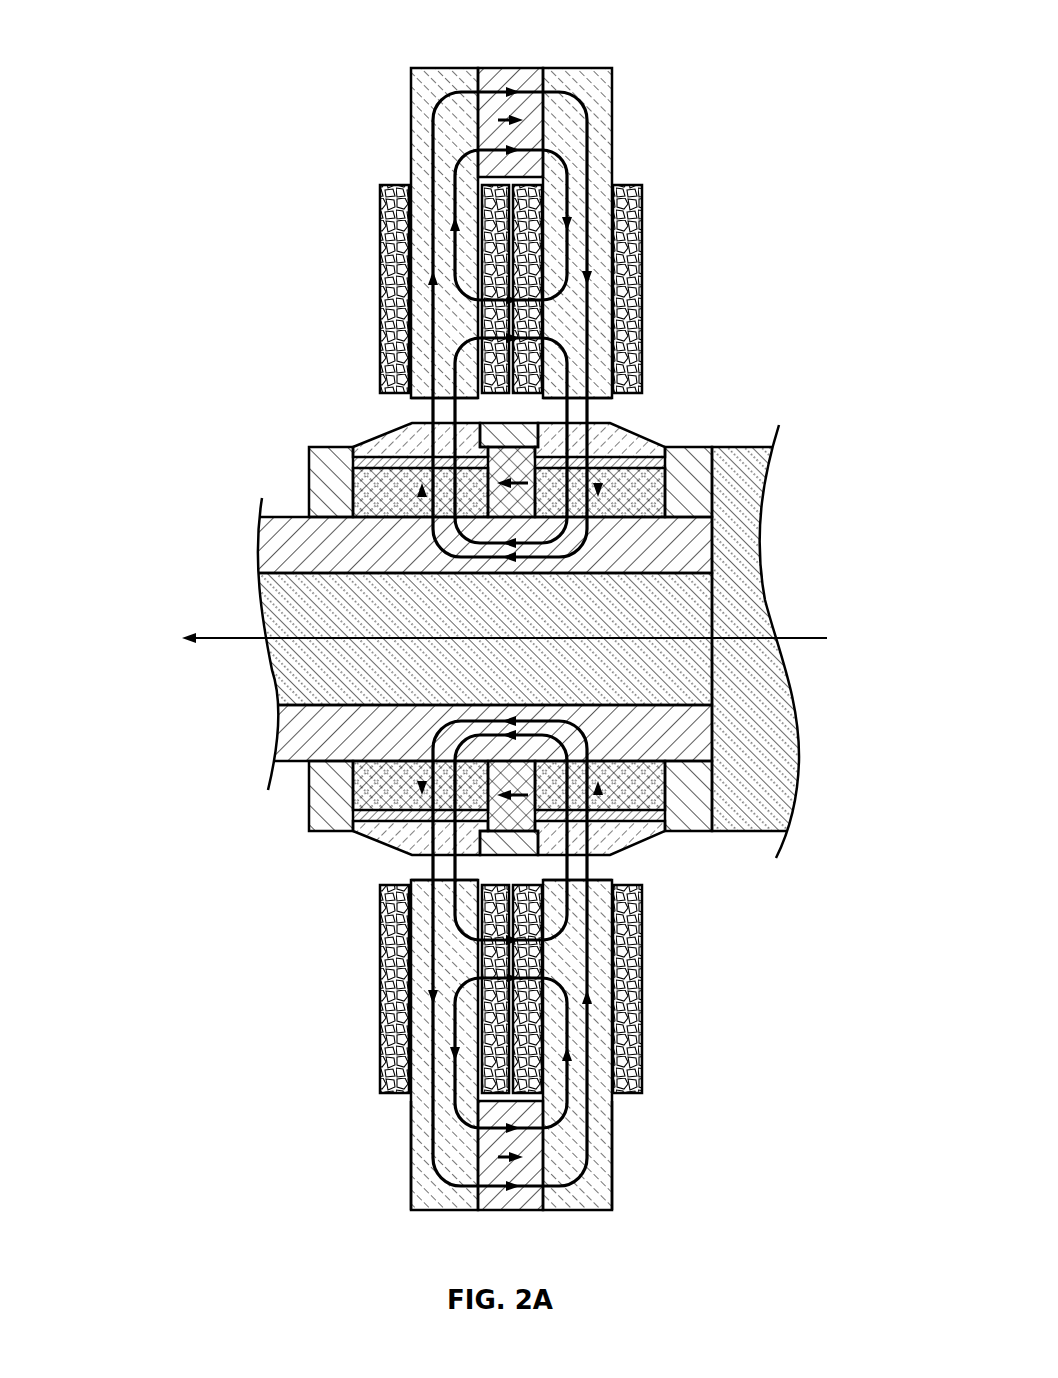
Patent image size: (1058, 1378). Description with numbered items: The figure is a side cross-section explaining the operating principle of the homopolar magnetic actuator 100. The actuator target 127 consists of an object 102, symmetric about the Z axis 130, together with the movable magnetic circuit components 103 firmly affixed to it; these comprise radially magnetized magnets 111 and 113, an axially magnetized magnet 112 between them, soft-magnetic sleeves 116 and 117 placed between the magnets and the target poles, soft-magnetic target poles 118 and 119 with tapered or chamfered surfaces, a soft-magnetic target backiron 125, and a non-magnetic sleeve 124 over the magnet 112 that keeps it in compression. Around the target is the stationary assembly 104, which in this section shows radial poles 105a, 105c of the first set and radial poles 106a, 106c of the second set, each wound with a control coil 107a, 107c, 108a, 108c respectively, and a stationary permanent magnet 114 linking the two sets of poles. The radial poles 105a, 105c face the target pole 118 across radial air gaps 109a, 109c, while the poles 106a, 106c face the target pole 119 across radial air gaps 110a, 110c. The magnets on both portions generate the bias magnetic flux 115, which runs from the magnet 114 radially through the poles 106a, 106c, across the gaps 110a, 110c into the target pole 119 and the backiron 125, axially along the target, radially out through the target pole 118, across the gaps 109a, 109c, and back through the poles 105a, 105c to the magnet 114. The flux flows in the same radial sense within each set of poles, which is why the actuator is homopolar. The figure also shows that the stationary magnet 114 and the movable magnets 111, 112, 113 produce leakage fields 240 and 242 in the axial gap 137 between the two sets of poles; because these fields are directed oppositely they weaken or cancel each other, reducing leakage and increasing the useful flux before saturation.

The magnetic actuator 100 is at (170, 74).
The object 102 is at (777, 752).
The movable magnetic circuit components 103 is at (205, 467).
The stationary assembly 104 is at (240, 181).
The radial pole 105a is at (427, 198).
The radial pole 105c is at (443, 1107).
The radial pole 106a is at (602, 200).
The radial pole 106c is at (578, 1107).
The control coil 107a is at (393, 240).
The control coil 107c is at (390, 1013).
The control coil 108a is at (630, 263).
The control coil 108c is at (632, 1013).
The radial air gap 109a is at (415, 412).
The radial air gap 109c is at (447, 863).
The radial air gap 110a is at (614, 406).
The radial air gap 110c is at (580, 863).
The radially magnetized magnet 111 is at (387, 507).
The axially magnetized magnet 112 is at (518, 505).
The radially magnetized magnet 113 is at (630, 507).
The stationary permanent magnet 114 is at (512, 82).
The bias magnetic flux 115 is at (587, 110).
The soft-magnetic sleeve 116 is at (378, 468).
The soft-magnetic sleeve 117 is at (620, 468).
The target pole 118 is at (398, 442).
The target pole 119 is at (637, 443).
The sleeve 124 is at (517, 435).
The target backiron 125 is at (302, 738).
The actuator target 127 is at (193, 549).
The Z axis 130 is at (228, 636).
The axial gap 137 is at (505, 201).
The leakage field 240 is at (565, 157).
The leakage field 242 is at (452, 360).